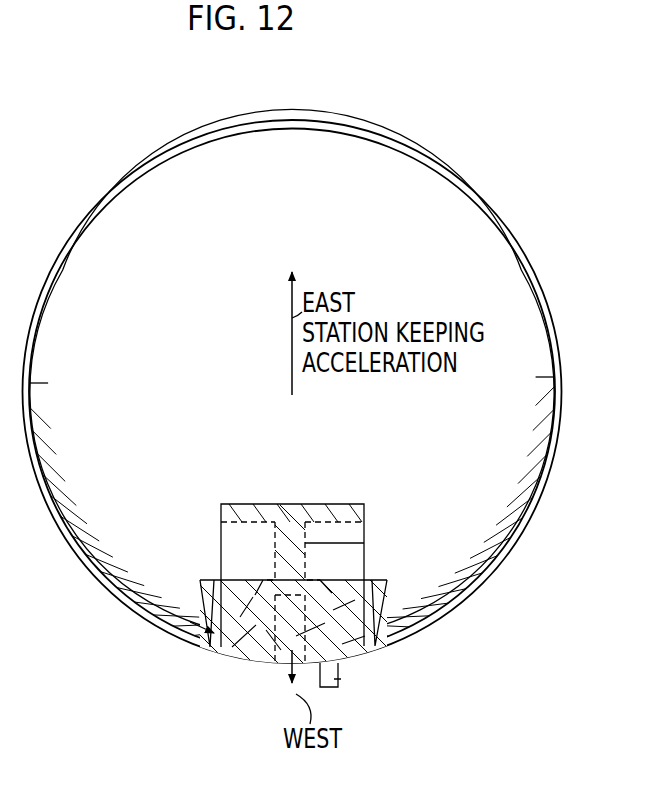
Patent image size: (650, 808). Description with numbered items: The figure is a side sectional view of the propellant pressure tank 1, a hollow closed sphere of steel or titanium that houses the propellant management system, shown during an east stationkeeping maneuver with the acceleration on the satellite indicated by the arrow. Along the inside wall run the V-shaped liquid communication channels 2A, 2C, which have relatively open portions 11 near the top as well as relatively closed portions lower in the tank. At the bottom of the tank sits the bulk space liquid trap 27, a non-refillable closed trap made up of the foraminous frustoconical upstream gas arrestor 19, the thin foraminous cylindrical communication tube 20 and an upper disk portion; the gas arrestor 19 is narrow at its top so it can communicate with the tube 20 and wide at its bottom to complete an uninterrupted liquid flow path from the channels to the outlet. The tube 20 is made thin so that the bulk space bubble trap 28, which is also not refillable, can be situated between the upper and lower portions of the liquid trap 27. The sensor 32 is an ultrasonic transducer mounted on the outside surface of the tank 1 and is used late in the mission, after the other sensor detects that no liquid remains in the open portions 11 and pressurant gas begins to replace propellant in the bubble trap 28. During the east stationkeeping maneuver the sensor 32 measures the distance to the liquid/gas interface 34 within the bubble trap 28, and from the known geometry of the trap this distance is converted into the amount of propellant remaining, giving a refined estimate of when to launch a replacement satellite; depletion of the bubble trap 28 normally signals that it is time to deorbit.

The propellant pressure tank 1 is at (466, 176).
The liquid communication channel 2A is at (70, 305).
The liquid communication channel 2C is at (506, 288).
The relatively open portion 11 is at (156, 179).
The upstream gas arrestor 19 is at (275, 587).
The cylindrical communication tube 20 is at (364, 543).
The bulk space liquid trap 27 is at (368, 500).
The bulk space bubble trap 28 is at (357, 522).
The ultrasonic transducer 32 is at (338, 680).
The liquid/gas interface 34 is at (343, 588).